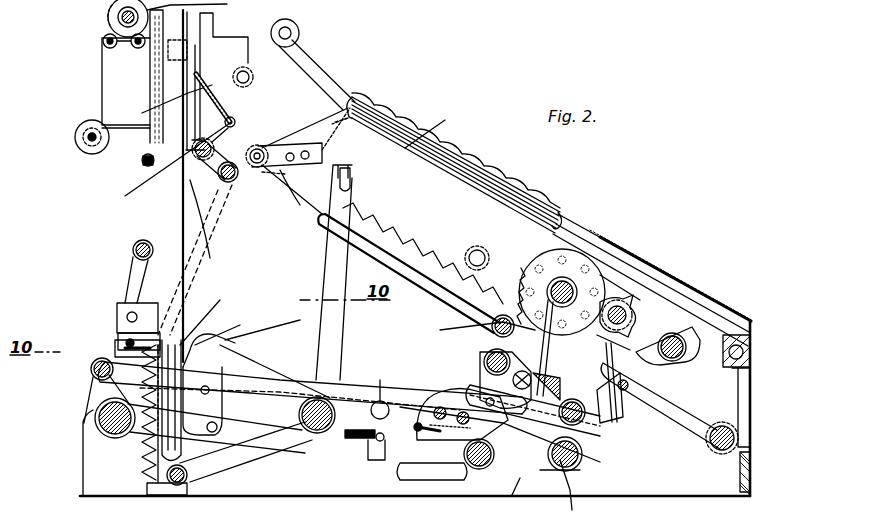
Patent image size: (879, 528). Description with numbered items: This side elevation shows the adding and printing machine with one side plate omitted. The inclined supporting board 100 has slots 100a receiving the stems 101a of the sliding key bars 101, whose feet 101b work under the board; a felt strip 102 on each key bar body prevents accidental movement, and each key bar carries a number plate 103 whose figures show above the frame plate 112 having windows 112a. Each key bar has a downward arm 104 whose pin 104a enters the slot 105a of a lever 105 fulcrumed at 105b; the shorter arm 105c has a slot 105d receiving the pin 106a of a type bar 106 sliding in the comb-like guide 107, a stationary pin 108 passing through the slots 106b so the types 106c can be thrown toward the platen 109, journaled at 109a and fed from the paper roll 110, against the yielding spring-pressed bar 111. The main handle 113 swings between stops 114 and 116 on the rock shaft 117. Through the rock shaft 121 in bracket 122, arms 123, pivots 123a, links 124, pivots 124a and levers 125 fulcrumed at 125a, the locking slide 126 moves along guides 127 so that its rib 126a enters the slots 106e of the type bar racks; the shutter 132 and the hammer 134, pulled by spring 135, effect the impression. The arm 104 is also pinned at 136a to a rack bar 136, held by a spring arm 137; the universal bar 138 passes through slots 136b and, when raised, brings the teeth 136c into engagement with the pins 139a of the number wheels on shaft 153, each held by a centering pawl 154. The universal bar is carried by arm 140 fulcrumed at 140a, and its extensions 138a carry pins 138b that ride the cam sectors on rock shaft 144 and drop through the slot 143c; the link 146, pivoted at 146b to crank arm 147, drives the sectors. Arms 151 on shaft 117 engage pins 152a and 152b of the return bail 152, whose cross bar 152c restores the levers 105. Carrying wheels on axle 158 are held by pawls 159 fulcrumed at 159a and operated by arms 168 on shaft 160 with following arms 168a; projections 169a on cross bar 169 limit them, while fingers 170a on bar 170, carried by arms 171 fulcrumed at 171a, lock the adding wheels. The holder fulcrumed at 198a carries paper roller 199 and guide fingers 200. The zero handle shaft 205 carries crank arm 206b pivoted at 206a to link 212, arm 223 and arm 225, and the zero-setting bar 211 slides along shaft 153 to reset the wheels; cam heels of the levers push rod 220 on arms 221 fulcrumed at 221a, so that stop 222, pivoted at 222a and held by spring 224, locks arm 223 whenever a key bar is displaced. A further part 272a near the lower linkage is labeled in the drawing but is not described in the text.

The top or supporting board 100 is at (348, 100).
The parallel slots 100a is at (672, 285).
The sliding key bars 101 is at (368, 110).
The stems or shanks 101a is at (440, 121).
The feet or bases 101b is at (547, 224).
The felt strip 102 is at (458, 165).
The number plate 103 is at (535, 205).
The arm 104 is at (297, 156).
The transverse pin 104a is at (350, 112).
The lever 105 is at (310, 374).
The longitudinal slot 105a is at (352, 172).
The fulcrum 105b is at (305, 380).
The lower arm 105c is at (262, 452).
The longitudinal slot 105d is at (195, 470).
The type bar 106 is at (141, 285).
The pin 106a is at (143, 460).
The longitudinal slots 106b is at (160, 440).
The type 106c is at (150, 99).
The slots 106e is at (143, 480).
The fixed guide 107 is at (176, 60).
The stationary pin 108 is at (200, 338).
The platen 109 is at (110, 12).
The journal 109a is at (122, 20).
The paper roll 110 is at (78, 140).
The spring-pressed bar 111 is at (142, 165).
The frame plate 112 is at (572, 222).
The windows 112a is at (612, 236).
The main operating handle 113 is at (299, 38).
The stop 114 is at (242, 70).
The stop 116 is at (478, 250).
The rock shaft 117 is at (100, 430).
The rock shaft 121 is at (215, 147).
The bracket 122 is at (150, 185).
The arms 123 is at (197, 165).
The pivot 123a is at (222, 240).
The links 124 is at (212, 258).
The pivot 124a is at (133, 250).
The levers 125 is at (130, 280).
The fulcrum 125a is at (126, 316).
The locking slide 126 is at (123, 350).
The rib 126a is at (215, 313).
The fixed guides 127 is at (118, 340).
The shutter 132 is at (161, 104).
The striker or hammer 134 is at (207, 25).
The spring 135 is at (215, 92).
The rack bar 136 is at (381, 249).
The connecting pin 136a is at (276, 192).
The longitudinal slots 136b is at (395, 232).
The teeth 136c is at (420, 248).
The spring arm 137 is at (265, 140).
The universal bar 138 is at (492, 330).
The extension 138a is at (484, 362).
The transverse pin 138b is at (522, 390).
The teeth or pins 139a is at (632, 268).
The arm 140 is at (692, 412).
The fulcrum 140a is at (712, 448).
The slot 143c is at (454, 425).
The rock shaft 144 is at (482, 465).
The link 146 is at (420, 400).
The pivotal connection 146b is at (93, 385).
The crank arm 147 is at (95, 400).
The arms 151 is at (197, 396).
The return bail 152 is at (256, 385).
The pin 152a is at (220, 424).
The pin 152b is at (273, 325).
The central cross bar 152c is at (275, 328).
The shaft 153 is at (522, 290).
The holding or centering pawl 154 is at (526, 266).
The axle 158 is at (634, 312).
The centering pawl or detent 159 is at (580, 422).
The fulcrum 159a is at (583, 455).
The shaft 160 is at (687, 346).
The arms 168 is at (632, 335).
The following arm 168a is at (688, 360).
The cross bar 169 is at (618, 422).
The projections 169a is at (655, 373).
The transverse bar 170 is at (565, 360).
The fingers 170a is at (606, 313).
The arms 171 is at (460, 326).
The fulcrum 171a is at (545, 365).
The fulcrum 198a is at (105, 45).
The paper roller 199 is at (136, 49).
The paper guide fingers 200 is at (203, 8).
The rock shaft 205 is at (579, 480).
The pivot 206a is at (612, 440).
The crank arm 206b is at (612, 476).
The zero-setting bar 211 is at (560, 290).
The link 212 is at (575, 493).
The rod 220 is at (350, 440).
The arms 221 is at (413, 424).
The fulcrum 221a is at (393, 390).
The stop 222 is at (376, 462).
The pivot 222a is at (376, 442).
The arm 223 is at (432, 471).
The spring 224 is at (333, 415).
The arm 225 is at (518, 497).
The link 272a is at (551, 458).